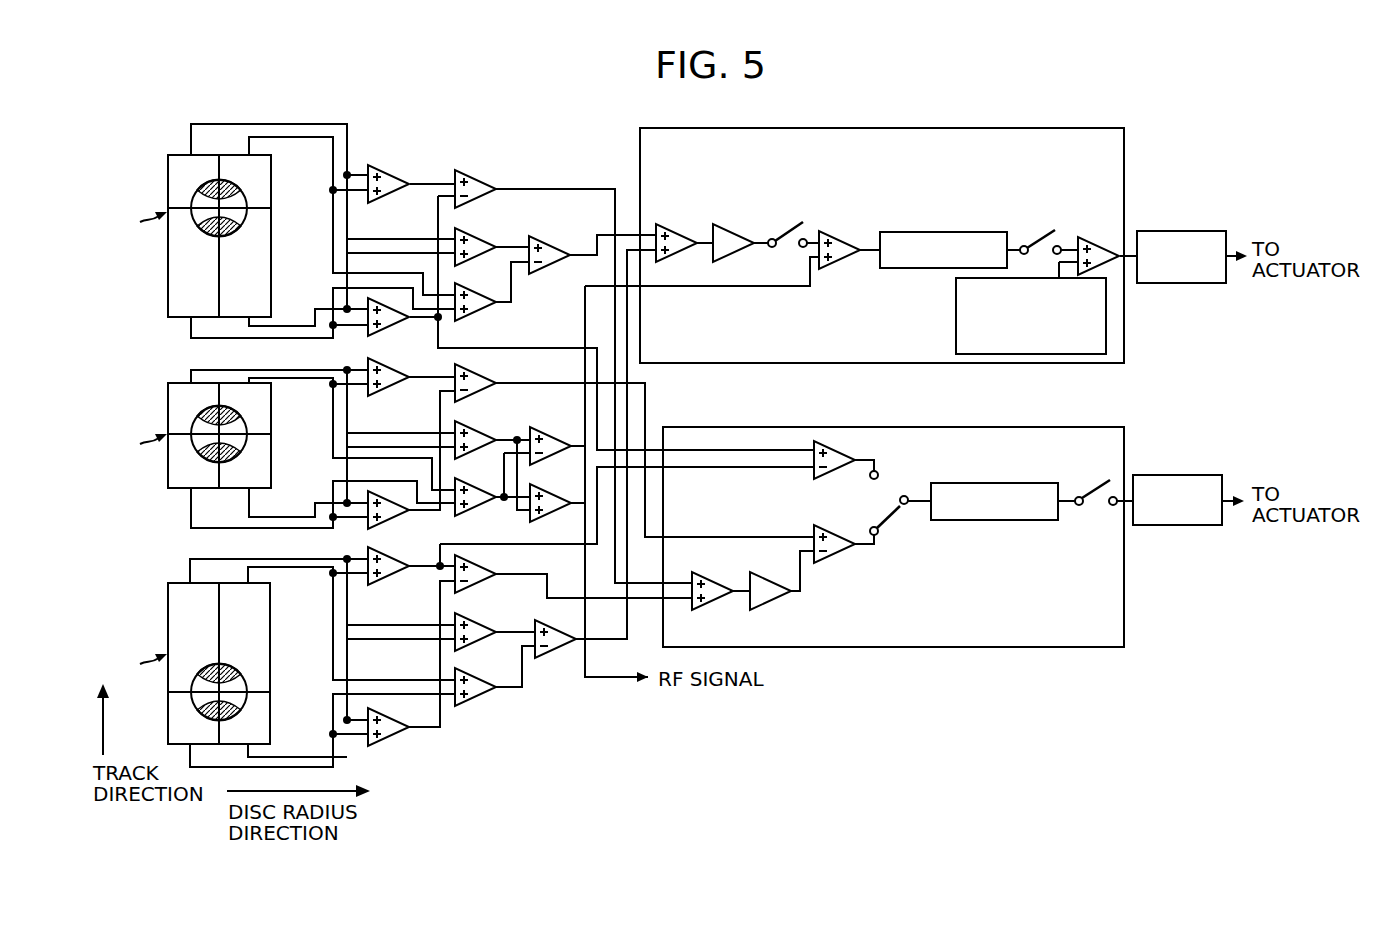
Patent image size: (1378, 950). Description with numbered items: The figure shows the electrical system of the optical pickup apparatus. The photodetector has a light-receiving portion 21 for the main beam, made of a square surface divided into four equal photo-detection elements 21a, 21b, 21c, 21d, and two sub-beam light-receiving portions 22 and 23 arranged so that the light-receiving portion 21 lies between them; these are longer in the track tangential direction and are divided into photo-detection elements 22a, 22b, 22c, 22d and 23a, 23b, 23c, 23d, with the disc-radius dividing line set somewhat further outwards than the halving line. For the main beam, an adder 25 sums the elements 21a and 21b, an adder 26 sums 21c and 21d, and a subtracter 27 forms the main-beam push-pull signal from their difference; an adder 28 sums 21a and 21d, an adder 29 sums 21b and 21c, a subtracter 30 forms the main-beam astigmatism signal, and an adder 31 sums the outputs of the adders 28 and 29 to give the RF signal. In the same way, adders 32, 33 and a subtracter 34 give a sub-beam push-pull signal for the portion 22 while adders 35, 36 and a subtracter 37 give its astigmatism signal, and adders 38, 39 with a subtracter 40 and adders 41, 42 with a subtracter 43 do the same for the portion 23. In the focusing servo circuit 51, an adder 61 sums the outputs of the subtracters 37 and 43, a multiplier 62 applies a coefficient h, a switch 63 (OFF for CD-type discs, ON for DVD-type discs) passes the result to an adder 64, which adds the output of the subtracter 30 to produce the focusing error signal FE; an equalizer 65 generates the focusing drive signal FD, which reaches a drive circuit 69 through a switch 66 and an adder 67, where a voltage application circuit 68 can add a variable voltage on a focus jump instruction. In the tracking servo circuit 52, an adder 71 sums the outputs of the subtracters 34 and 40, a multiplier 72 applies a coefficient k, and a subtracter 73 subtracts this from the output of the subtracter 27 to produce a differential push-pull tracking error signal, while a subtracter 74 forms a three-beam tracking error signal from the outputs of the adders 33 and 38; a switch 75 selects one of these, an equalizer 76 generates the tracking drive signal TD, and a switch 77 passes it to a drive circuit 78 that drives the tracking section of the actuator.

The light-receiving portion 21 is at (190, 435).
The photo-detection element 21a is at (172, 410).
The photo-detection element 21b is at (263, 425).
The photo-detection element 21c is at (172, 470).
The photo-detection element 21d is at (262, 455).
The light-receiving portion 22 is at (191, 236).
The photo-detection element 22a is at (171, 186).
The photo-detection element 22b is at (263, 192).
The photo-detection element 22c is at (172, 247).
The photo-detection element 22d is at (263, 246).
The light-receiving portion 23 is at (189, 663).
The photo-detection element 23a is at (172, 628).
The photo-detection element 23b is at (263, 643).
The photo-detection element 23c is at (172, 708).
The photo-detection element 23d is at (263, 700).
The adder 25 is at (385, 390).
The adder 26 is at (385, 522).
The subtracter 27 is at (486, 378).
The adder 28 is at (476, 430).
The adder 29 is at (476, 509).
The subtracter 30 is at (548, 437).
The adder 31 is at (550, 491).
The adder 32 is at (392, 176).
The adder 33 is at (385, 328).
The subtracter 34 is at (480, 181).
The adder 35 is at (480, 239).
The adder 36 is at (480, 313).
The subtracter 37 is at (553, 247).
The adder 38 is at (385, 580).
The adder 39 is at (385, 742).
The subtracter 40 is at (478, 585).
The adder 41 is at (476, 643).
The adder 42 is at (476, 699).
The subtracter 43 is at (548, 655).
The focusing servo circuit 51 is at (1070, 128).
The tracking servo circuit 52 is at (1050, 647).
The adder 61 is at (672, 228).
The multiplier 62 is at (722, 226).
The switch 63 is at (800, 220).
The adder 64 is at (835, 233).
The equalizer 65 is at (935, 232).
The switch 66 is at (1040, 232).
The adder 67 is at (1095, 238).
The voltage application circuit 68 is at (956, 316).
The drive circuit 69 is at (1180, 231).
The adder 71 is at (706, 610).
The multiplier 72 is at (766, 610).
The subtracter 73 is at (835, 557).
The subtracter 74 is at (833, 475).
The switch 75 is at (893, 512).
The equalizer 76 is at (995, 483).
The switch 77 is at (1098, 480).
The drive circuit 78 is at (1185, 475).